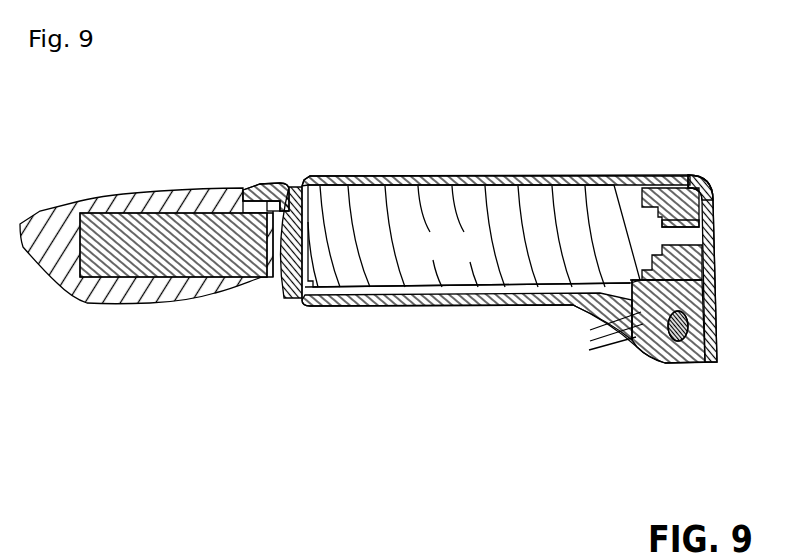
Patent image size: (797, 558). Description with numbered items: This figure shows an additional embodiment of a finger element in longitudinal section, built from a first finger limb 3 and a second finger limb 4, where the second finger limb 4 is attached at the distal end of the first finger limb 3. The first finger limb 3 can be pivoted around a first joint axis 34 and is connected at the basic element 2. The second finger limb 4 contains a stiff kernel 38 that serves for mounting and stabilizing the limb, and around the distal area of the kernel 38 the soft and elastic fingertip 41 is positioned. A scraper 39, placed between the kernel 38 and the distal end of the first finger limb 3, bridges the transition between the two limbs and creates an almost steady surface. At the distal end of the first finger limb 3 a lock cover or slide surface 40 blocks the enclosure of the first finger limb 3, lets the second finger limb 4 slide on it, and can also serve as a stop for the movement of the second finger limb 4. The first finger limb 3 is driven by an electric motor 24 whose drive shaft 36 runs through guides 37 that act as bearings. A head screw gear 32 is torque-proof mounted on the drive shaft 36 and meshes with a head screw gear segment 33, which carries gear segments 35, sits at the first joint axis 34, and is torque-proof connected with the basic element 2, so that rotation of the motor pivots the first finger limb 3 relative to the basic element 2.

The basic element 2 is at (748, 282).
The first finger limb 3 is at (443, 176).
The second finger limb 4 is at (157, 321).
The electric motor 24 is at (474, 236).
The head screw gear 32 is at (694, 189).
The head screw gear segment 33 is at (651, 330).
The first joint axis 34 is at (687, 336).
The gear segment 35 is at (595, 339).
The drive shaft 36 is at (688, 226).
The guide 37 is at (653, 198).
The kernel 38 is at (197, 223).
The scraper 39 is at (269, 183).
The slide surface/lock cover 40 is at (279, 272).
The fingertip 41 is at (44, 236).